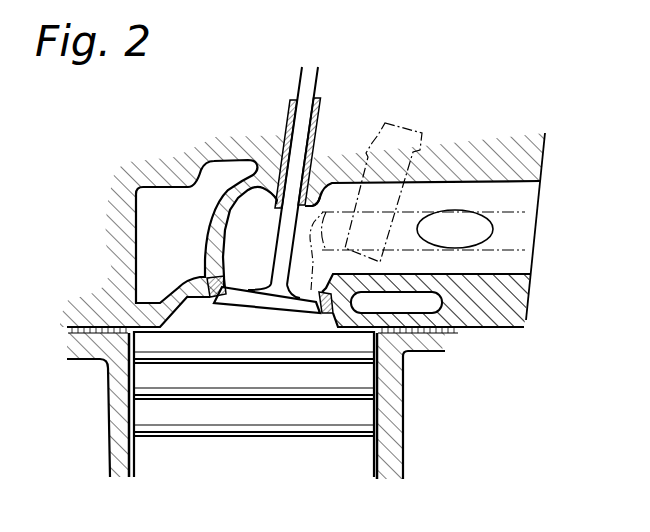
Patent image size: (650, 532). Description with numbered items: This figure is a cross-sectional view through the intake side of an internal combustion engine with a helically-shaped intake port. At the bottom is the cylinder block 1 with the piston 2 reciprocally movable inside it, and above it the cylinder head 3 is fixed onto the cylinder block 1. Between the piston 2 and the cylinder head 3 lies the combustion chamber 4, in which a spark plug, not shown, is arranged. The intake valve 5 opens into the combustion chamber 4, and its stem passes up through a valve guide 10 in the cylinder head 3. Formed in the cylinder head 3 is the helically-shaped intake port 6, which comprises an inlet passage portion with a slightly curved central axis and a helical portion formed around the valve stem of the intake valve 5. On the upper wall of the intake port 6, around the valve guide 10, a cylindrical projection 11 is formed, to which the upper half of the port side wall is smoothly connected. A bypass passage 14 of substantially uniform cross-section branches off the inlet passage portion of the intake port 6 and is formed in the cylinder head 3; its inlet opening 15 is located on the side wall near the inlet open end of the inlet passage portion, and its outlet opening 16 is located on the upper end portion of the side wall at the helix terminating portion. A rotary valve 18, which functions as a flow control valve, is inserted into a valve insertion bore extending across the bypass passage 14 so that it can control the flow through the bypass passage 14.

The cylinder block 1 is at (112, 421).
The piston 2 is at (163, 453).
The cylinder head 3 is at (125, 247).
The combustion chamber 4 is at (209, 324).
The intake valve 5 is at (278, 236).
The helically-shaped intake port 6 is at (427, 193).
The valve guide 10 is at (320, 100).
The cylindrical projection 11 is at (314, 200).
The bypass passage 14 is at (403, 245).
The inlet opening 15 is at (476, 234).
The outlet opening 16 is at (308, 292).
The rotary valve 18 is at (409, 124).